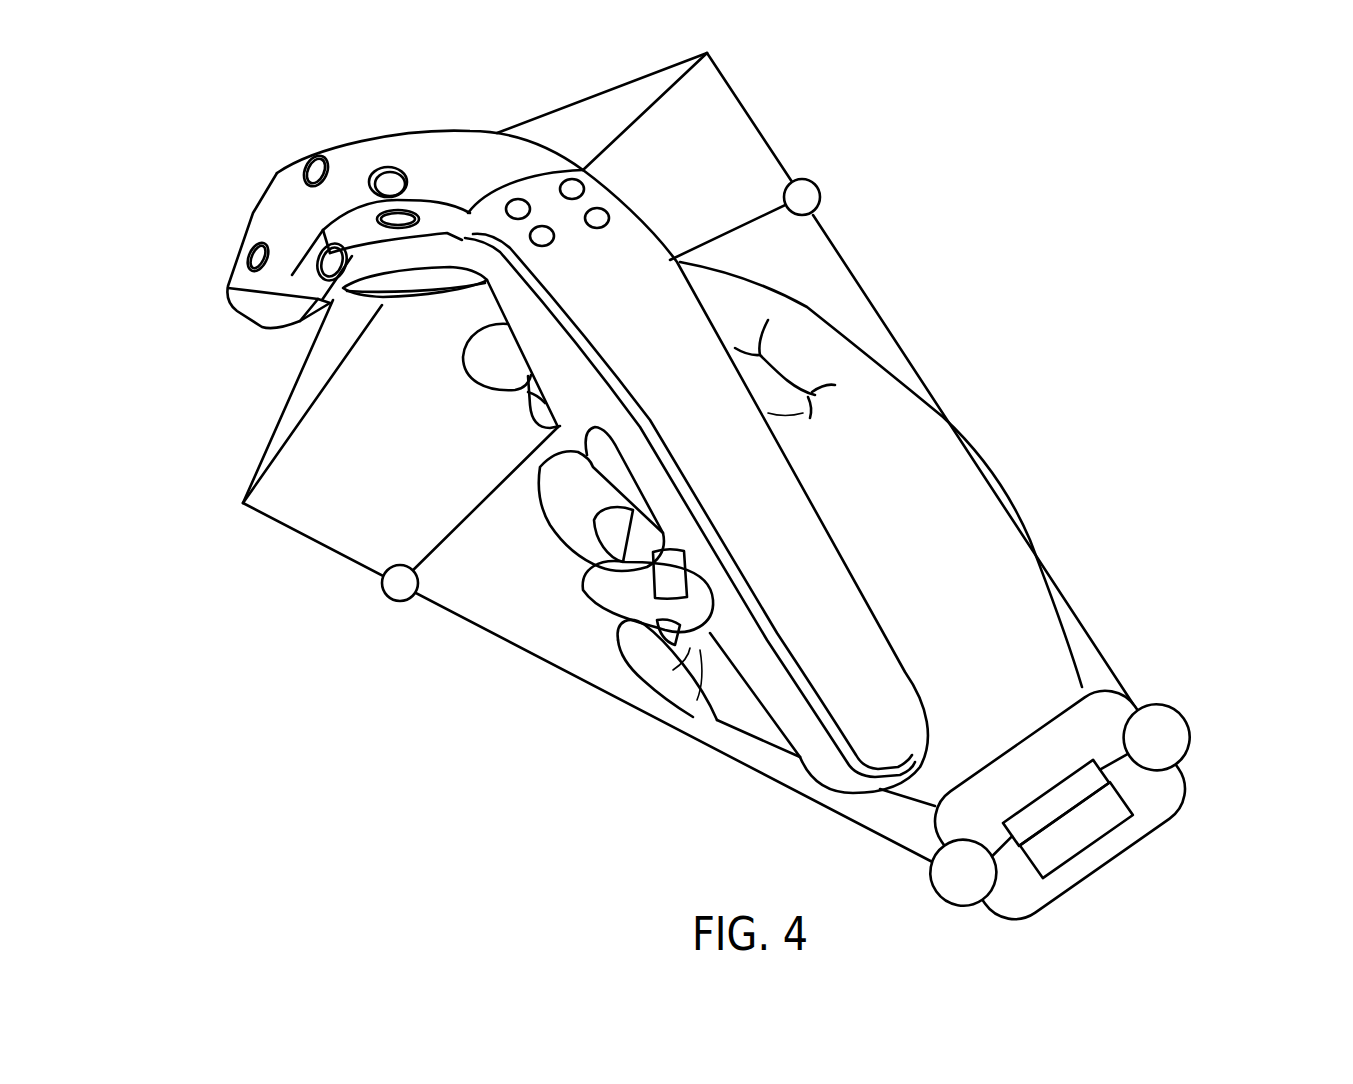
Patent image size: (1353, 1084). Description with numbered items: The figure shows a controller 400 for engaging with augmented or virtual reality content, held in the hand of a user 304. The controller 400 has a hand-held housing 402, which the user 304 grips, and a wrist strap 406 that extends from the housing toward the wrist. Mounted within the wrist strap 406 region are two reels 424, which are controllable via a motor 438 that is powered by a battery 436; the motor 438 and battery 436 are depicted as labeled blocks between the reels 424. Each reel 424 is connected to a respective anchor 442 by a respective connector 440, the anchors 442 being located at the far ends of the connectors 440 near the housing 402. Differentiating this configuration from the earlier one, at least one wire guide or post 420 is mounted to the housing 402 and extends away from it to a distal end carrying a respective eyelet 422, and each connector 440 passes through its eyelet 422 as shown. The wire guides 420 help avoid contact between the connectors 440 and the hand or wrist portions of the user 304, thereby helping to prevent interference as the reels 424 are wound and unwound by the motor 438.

The controller 400 is at (222, 131).
The hand-held housing 402 is at (622, 206).
The user 304 is at (955, 571).
The wire guide or post 420 is at (752, 222).
The eyelet 422 is at (816, 184).
The reel 424 is at (1186, 740).
The battery 436 is at (1100, 840).
The motor 438 is at (1052, 788).
The wrist strap 406 is at (1052, 899).
The connector 440 is at (1089, 636).
The anchor 442 is at (600, 96).